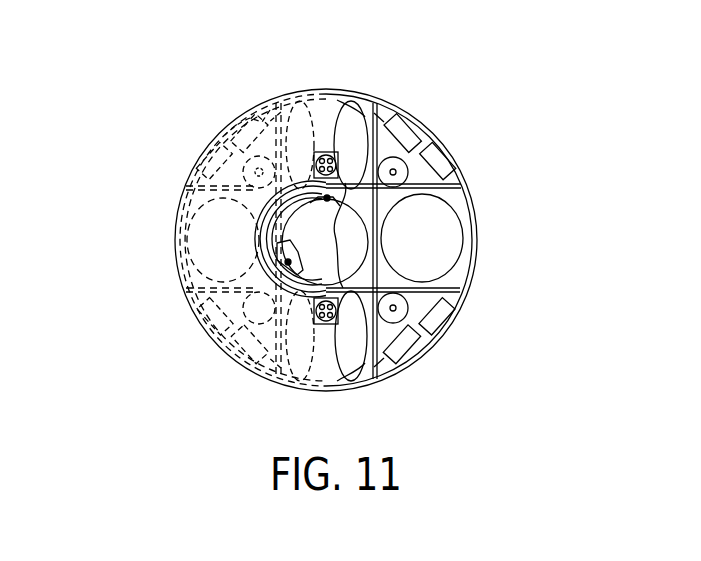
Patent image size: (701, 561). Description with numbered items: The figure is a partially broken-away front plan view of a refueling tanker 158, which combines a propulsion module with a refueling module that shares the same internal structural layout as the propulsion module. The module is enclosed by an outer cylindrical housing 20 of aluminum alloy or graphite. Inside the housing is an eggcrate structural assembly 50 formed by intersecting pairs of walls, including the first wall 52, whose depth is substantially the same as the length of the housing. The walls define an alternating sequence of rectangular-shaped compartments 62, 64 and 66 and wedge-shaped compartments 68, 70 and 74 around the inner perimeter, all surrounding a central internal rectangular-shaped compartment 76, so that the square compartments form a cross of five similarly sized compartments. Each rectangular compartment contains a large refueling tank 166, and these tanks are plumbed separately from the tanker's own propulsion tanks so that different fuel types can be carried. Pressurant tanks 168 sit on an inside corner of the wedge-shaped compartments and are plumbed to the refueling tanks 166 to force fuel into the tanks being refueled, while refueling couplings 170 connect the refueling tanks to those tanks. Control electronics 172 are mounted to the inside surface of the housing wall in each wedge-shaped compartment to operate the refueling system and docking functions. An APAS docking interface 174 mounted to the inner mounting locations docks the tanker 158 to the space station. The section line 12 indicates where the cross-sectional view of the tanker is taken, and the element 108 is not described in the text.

The line 12— 12 is at (326, 381).
The outer cylindrical housing 20 is at (412, 116).
The eggcrate structural assembly 50 is at (462, 190).
The first wall 52 is at (376, 104).
The rectangular-shaped compartment 62 is at (374, 372).
The rectangular-shaped compartment 64 is at (461, 282).
The rectangular-shaped compartment 66 is at (362, 95).
The wedge-shaped compartment 68 is at (183, 203).
The wedge-shaped compartment 70 is at (461, 300).
The wedge-shaped compartment 74 is at (270, 110).
The internal rectangular-shaped compartment 76 is at (440, 212).
The key members 108 is at (440, 138).
The refueling tanker 158 is at (537, 77).
The refueling tank 166 is at (265, 256).
The pressurant tank 168 is at (403, 325).
The refueling coupling 170 is at (311, 160).
The control electronics 172 is at (240, 128).
The APAS docking interface 174 is at (288, 264).